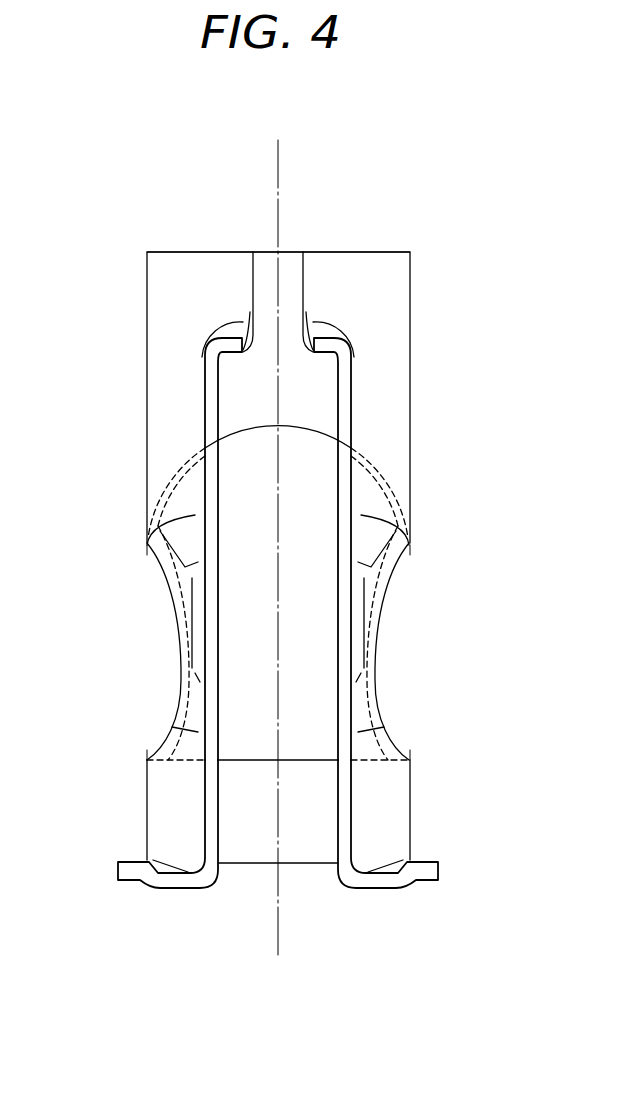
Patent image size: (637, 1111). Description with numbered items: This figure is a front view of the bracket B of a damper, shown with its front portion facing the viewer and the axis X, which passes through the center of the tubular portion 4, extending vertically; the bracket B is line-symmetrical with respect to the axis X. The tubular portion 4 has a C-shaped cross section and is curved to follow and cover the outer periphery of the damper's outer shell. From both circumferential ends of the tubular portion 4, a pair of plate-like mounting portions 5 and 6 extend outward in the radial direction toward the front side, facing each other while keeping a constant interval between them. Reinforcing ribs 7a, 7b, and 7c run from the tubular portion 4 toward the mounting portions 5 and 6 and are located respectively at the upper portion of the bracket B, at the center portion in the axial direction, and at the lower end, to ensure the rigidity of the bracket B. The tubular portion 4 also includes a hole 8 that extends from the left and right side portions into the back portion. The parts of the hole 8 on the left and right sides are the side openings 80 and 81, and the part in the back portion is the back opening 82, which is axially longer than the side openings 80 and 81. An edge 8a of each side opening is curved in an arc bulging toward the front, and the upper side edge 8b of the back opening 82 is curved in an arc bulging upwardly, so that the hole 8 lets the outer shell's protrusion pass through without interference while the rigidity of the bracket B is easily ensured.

The tubular portion 4 is at (165, 298).
The mounting portion 5 is at (210, 705).
The mounting portion 6 is at (345, 717).
The reinforcing rib 7a is at (231, 327).
The reinforcing rib 7b is at (185, 640).
The reinforcing rib 7c is at (135, 873).
The hole 8 is at (240, 490).
The edge 8a is at (378, 687).
The upper side edge 8b is at (318, 433).
The side opening 80 is at (152, 567).
The side opening 81 is at (393, 597).
The back opening 82 is at (259, 599).
The axis X is at (280, 532).
The bracket B is at (425, 245).